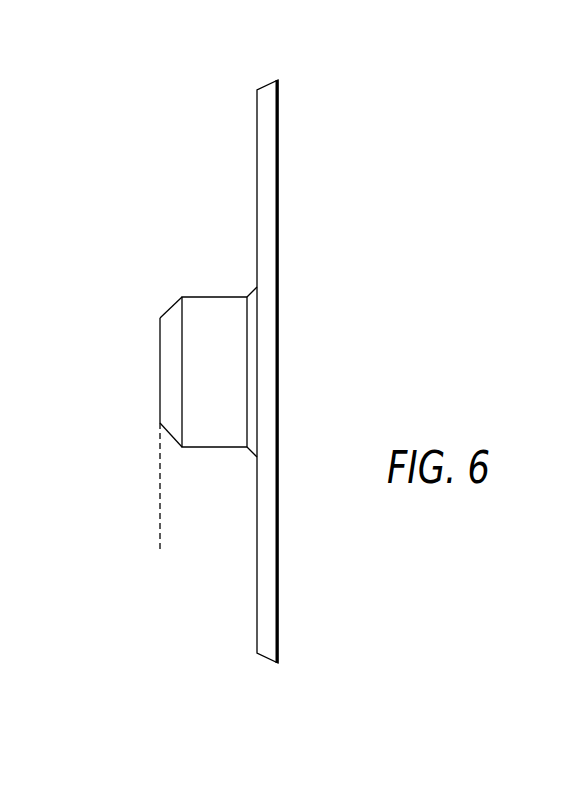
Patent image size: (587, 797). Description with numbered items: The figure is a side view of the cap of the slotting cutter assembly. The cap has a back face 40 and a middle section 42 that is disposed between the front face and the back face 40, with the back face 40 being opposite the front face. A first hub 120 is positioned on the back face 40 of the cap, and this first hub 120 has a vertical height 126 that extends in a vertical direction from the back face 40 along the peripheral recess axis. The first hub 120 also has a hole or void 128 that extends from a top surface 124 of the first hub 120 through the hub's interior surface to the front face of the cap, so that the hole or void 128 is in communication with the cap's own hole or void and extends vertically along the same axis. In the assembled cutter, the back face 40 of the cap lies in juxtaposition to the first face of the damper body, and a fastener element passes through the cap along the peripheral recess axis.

The back face 40 is at (257, 172).
The middle section 42 is at (268, 98).
The first hub 120 is at (198, 291).
The hole or void 128 is at (154, 343).
The top surface 124 is at (172, 438).
The vertical height 126 is at (257, 522).